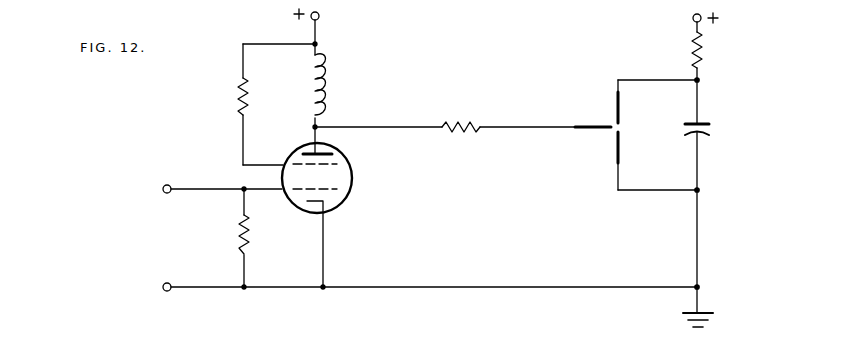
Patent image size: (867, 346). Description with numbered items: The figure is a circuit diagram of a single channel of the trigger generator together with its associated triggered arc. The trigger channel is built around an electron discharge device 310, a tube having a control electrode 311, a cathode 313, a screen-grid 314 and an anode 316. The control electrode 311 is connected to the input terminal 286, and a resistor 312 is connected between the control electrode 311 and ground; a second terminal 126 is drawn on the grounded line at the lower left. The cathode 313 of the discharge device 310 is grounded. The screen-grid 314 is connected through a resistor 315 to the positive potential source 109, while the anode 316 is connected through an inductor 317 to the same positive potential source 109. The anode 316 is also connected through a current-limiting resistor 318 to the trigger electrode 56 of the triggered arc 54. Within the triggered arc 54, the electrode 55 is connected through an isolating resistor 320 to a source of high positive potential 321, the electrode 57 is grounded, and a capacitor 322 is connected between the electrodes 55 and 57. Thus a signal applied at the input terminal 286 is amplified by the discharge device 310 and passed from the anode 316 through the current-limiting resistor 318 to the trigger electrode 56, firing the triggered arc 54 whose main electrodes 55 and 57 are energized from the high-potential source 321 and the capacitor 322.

The positive potential source 109 is at (319, 17).
The inductor 317 is at (322, 90).
The resistor 315 is at (240, 98).
The resistor 312 is at (241, 228).
The input terminal 286 is at (161, 189).
The input terminal 126 is at (162, 284).
The electron discharge device 310 is at (341, 180).
The anode 316 is at (305, 152).
The screen-grid 314 is at (336, 164).
The control electrode 311 is at (335, 190).
The cathode 313 is at (313, 204).
The current-limiting resistor 318 is at (458, 126).
The triggered arc 54 is at (597, 74).
The electrode 55 is at (615, 105).
The trigger electrode 56 is at (597, 131).
The electrode 57 is at (616, 159).
The source of high positive potential 321 is at (692, 21).
The isolating resistor 320 is at (703, 62).
The capacitor 322 is at (712, 131).